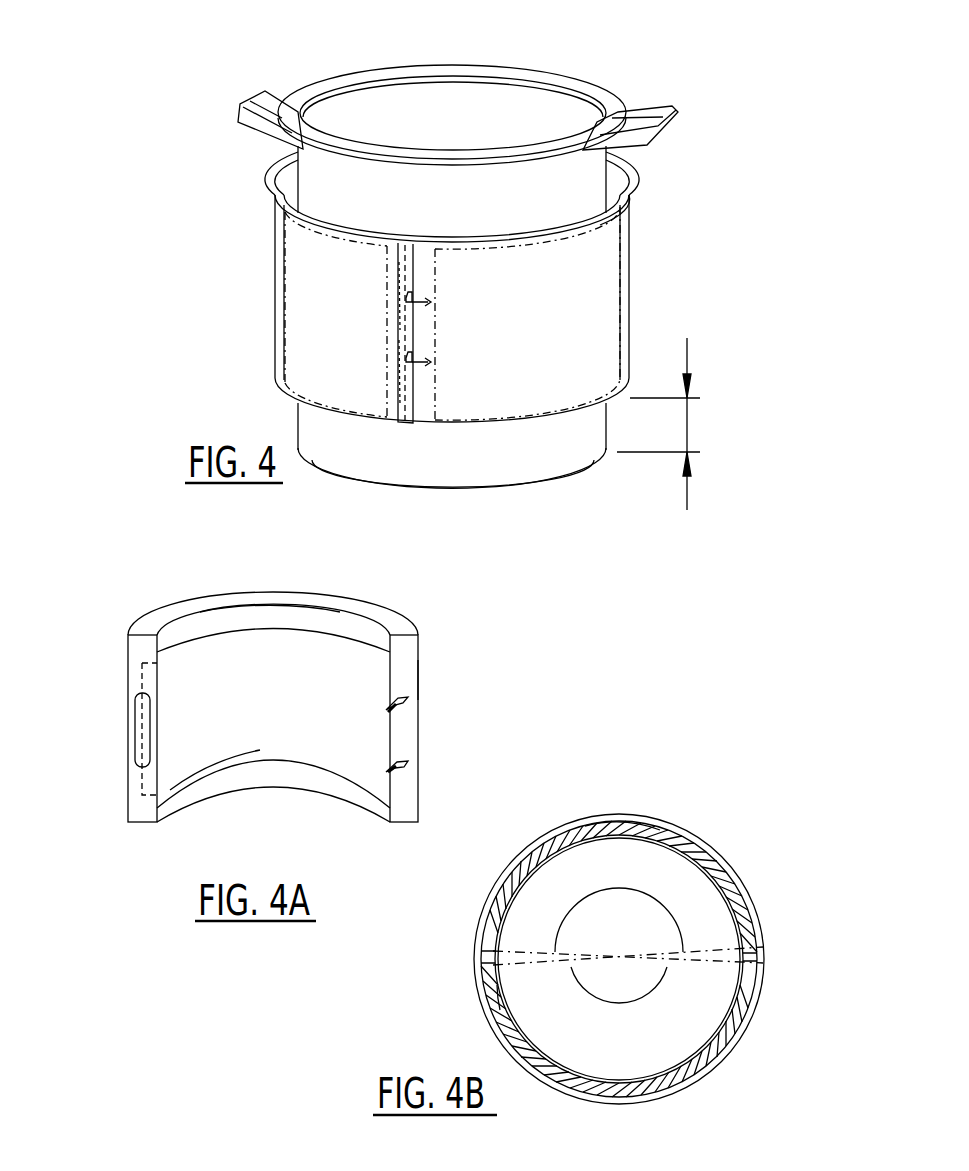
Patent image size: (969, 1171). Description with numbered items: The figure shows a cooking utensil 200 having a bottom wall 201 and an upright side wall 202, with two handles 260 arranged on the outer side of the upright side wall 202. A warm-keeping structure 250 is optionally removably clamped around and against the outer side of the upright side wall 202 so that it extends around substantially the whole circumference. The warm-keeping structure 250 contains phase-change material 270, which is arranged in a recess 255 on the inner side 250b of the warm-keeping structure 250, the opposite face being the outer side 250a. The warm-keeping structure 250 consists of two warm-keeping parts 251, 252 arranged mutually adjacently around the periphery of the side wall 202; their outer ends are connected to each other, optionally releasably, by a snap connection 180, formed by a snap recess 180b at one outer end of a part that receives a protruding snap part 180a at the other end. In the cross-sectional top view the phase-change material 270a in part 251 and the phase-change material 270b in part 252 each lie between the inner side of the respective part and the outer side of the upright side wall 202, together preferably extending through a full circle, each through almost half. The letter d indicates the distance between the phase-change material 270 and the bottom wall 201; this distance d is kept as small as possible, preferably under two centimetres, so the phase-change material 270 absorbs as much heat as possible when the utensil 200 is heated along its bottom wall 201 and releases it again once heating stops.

In FIG. 4, the cooking utensil 200 is at (637, 73).
In FIG. 4, the bottom wall 201 is at (460, 495).
In FIG. 4, the upright side wall 202 is at (304, 171).
In FIG. 4B, the upright side wall 202 is at (619, 959).
In FIG. 4, the warm-keeping structure 250 is at (690, 275).
In FIG. 4B, the warm-keeping structure 250 is at (710, 783).
In FIG. 4A, the outer side 250a is at (420, 676).
In FIG. 4A, the inner side 250b is at (292, 617).
In FIG. 4A, the warm-keeping part 251 is at (222, 593).
In FIG. 4B, the warm-keeping part 251 is at (737, 862).
In FIG. 4A, the warm-keeping part 252 is at (273, 707).
In FIG. 4B, the warm-keeping part 252 is at (698, 1080).
In FIG. 4, the recess 255 is at (630, 222).
In FIG. 4A, the recess 255 is at (178, 750).
In FIG. 4, the handle 260 is at (255, 102).
In FIG. 4, the phase-change material 270 is at (312, 307).
In FIG. 4B, the phase-change material 270a is at (623, 828).
In FIG. 4B, the phase-change material 270b is at (484, 994).
In FIG. 4, the snap connection 180 is at (431, 338).
In FIG. 4A, the fastener hook 180a is at (403, 780).
In FIG. 4A, the snap recess 180b is at (138, 757).
In FIG. 4, the distance d is at (664, 424).